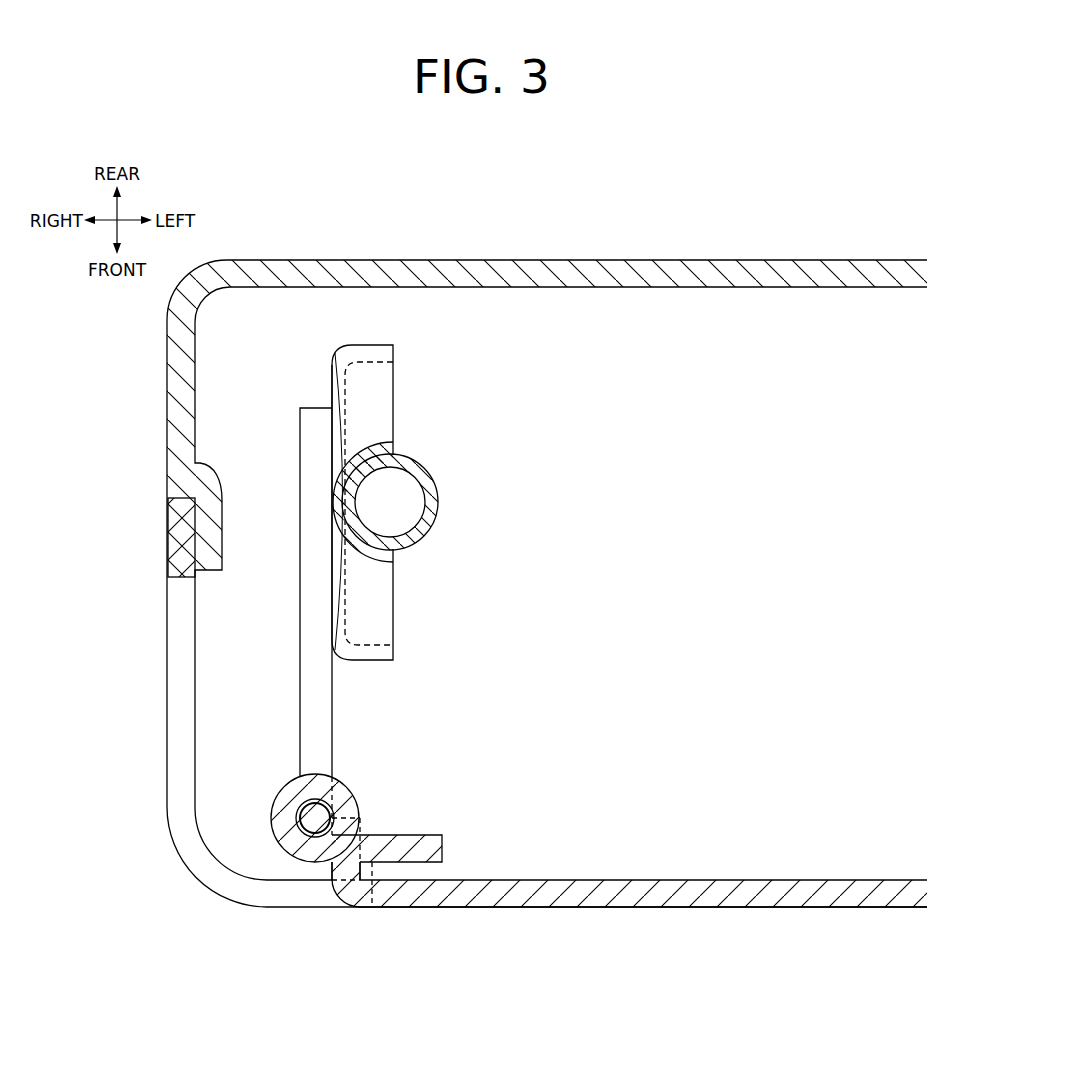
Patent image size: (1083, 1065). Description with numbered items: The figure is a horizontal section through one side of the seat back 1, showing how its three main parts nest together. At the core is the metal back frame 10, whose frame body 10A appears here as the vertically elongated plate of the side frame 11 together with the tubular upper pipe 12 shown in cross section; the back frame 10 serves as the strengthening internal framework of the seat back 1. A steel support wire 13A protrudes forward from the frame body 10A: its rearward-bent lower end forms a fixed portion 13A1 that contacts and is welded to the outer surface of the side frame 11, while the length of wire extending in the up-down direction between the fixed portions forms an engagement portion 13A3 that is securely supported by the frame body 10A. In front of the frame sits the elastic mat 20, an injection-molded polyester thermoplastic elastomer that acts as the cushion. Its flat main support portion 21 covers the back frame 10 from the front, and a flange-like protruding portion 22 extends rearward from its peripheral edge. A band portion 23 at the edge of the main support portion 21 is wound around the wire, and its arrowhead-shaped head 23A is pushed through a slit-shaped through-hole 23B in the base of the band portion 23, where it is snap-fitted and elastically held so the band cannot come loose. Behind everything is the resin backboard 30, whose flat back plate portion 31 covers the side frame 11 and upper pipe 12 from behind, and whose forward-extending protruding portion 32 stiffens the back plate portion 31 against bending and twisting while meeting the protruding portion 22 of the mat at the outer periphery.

The seat back 1 is at (337, 950).
The back frame 10 is at (432, 460).
The frame body 10A is at (505, 525).
The side frame 11 is at (382, 585).
The upper pipe 12 is at (432, 524).
The support wire 13A is at (310, 607).
The fixed portion 13A1 is at (312, 445).
The engagement portion 13A3 is at (345, 788).
The elastic mat 20 is at (507, 910).
The main support portion 21 is at (648, 897).
The protruding portion 22 is at (182, 538).
The band portion 23 is at (288, 802).
The head 23A is at (432, 848).
The through-hole 23B is at (365, 828).
The backboard 30 is at (545, 260).
The back plate portion 31 is at (686, 275).
The protruding portion 32 is at (207, 527).